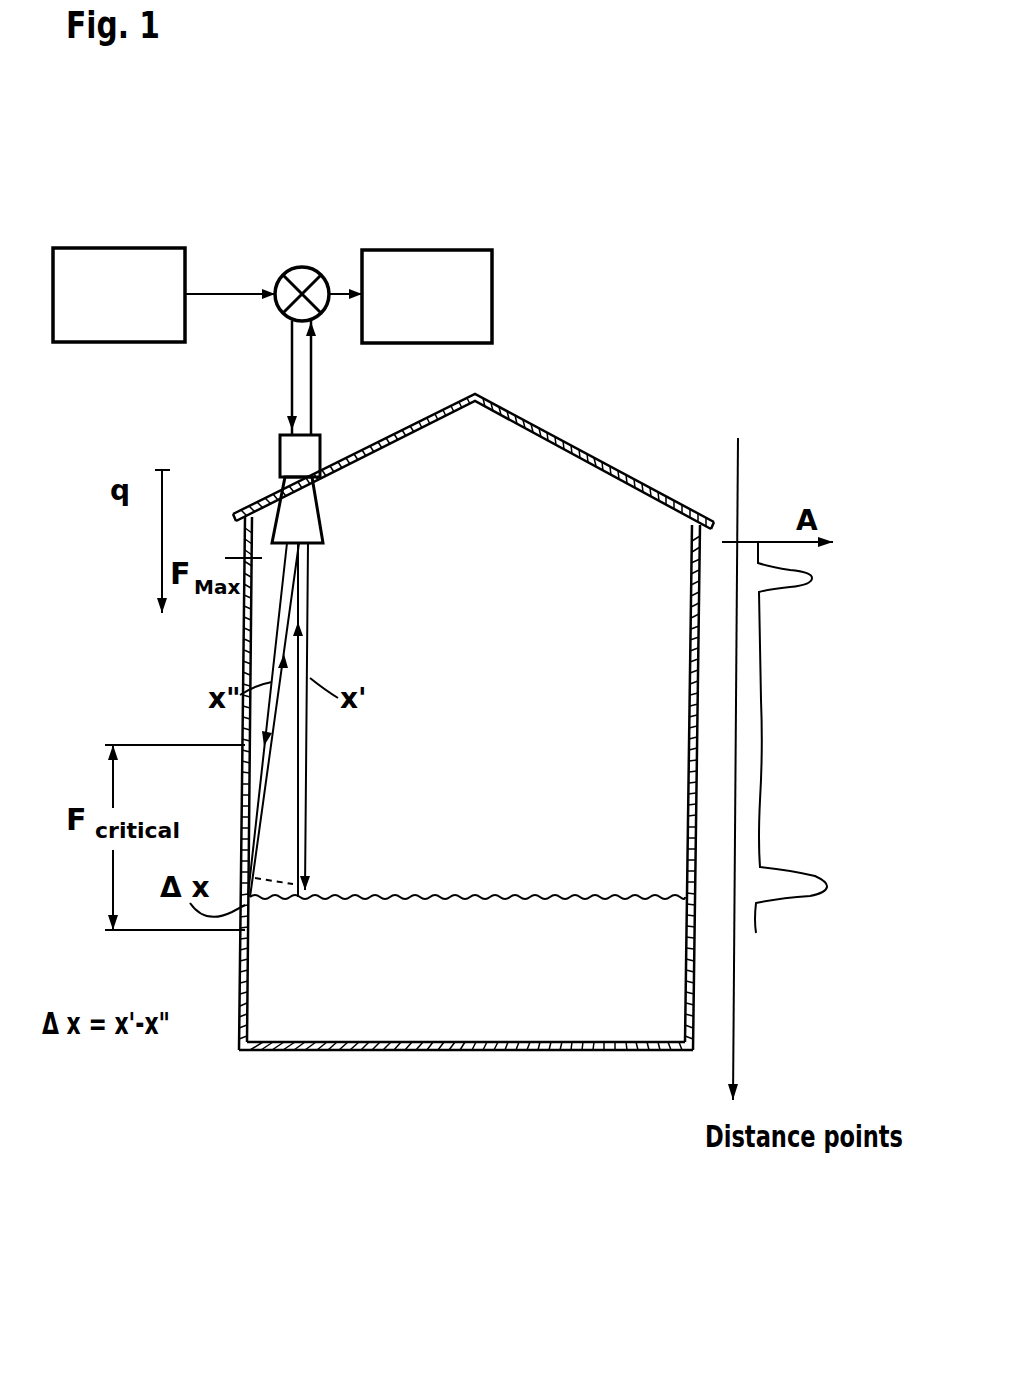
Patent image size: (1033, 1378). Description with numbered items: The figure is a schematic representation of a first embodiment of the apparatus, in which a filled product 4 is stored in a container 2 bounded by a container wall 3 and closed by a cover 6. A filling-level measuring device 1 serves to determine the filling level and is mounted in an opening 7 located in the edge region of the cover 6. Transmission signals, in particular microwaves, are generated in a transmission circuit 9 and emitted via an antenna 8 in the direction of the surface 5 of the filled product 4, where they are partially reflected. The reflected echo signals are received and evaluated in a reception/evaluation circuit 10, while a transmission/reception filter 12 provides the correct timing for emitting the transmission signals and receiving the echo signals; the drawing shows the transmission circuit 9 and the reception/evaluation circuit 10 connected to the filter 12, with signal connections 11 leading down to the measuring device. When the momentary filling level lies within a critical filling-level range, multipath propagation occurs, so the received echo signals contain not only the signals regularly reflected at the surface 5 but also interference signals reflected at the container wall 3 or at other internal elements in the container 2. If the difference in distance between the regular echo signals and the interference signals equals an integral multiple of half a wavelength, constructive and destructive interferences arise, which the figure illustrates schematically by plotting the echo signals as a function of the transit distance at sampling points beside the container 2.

The filling-level measuring device 1 is at (392, 382).
The container 2 is at (226, 1112).
The container wall 3 is at (245, 645).
The filled product 4 is at (461, 1018).
The surface 5 is at (465, 895).
The cover 6 is at (577, 450).
The opening 7 is at (280, 490).
The antenna 8 is at (306, 455).
The transmission circuit 9 is at (137, 268).
The reception/evaluation circuit 10 is at (470, 287).
The signal lines 11 is at (328, 372).
The transmission/reception filter 12 is at (302, 283).